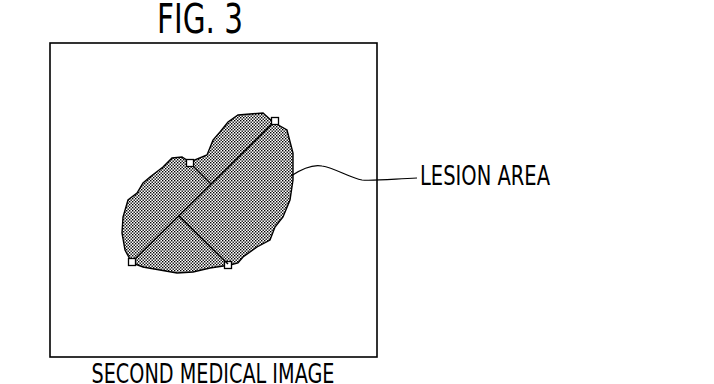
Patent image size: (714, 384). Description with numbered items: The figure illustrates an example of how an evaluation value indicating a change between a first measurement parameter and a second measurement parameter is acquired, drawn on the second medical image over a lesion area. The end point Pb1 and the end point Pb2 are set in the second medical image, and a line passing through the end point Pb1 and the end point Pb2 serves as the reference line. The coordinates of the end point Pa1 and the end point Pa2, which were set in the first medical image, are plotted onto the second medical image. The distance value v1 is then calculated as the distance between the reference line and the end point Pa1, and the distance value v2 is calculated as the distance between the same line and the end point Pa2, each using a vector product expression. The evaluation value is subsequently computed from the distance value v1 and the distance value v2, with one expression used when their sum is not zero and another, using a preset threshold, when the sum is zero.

The end point Pb1 is at (285, 103).
The end point Pb2 is at (119, 278).
The end point Pa1 is at (191, 147).
The end point Pa2 is at (229, 280).
The distance value v1 is at (193, 182).
The distance value v2 is at (205, 238).